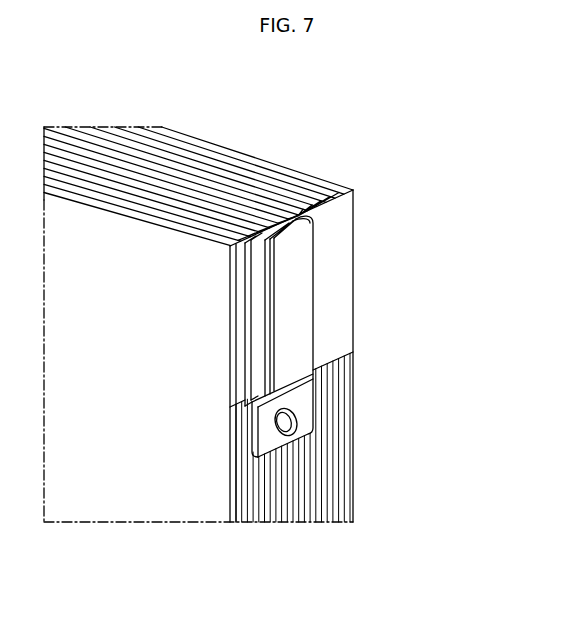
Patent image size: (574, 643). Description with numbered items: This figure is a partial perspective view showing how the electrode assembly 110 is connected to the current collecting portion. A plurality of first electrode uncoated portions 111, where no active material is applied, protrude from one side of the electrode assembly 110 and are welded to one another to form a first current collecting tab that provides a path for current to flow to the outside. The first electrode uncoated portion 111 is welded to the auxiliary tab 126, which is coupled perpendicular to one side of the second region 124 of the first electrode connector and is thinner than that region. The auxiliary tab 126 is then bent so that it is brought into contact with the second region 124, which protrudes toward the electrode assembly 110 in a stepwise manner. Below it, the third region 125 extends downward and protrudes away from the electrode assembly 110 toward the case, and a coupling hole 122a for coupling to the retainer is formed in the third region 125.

The electrode assembly 110 is at (264, 158).
The first electrode uncoated portion 111 is at (300, 296).
The coupling hole 122a is at (291, 405).
The second region 124 is at (253, 340).
The third region 125 is at (273, 442).
The auxiliary tab 126 is at (262, 378).